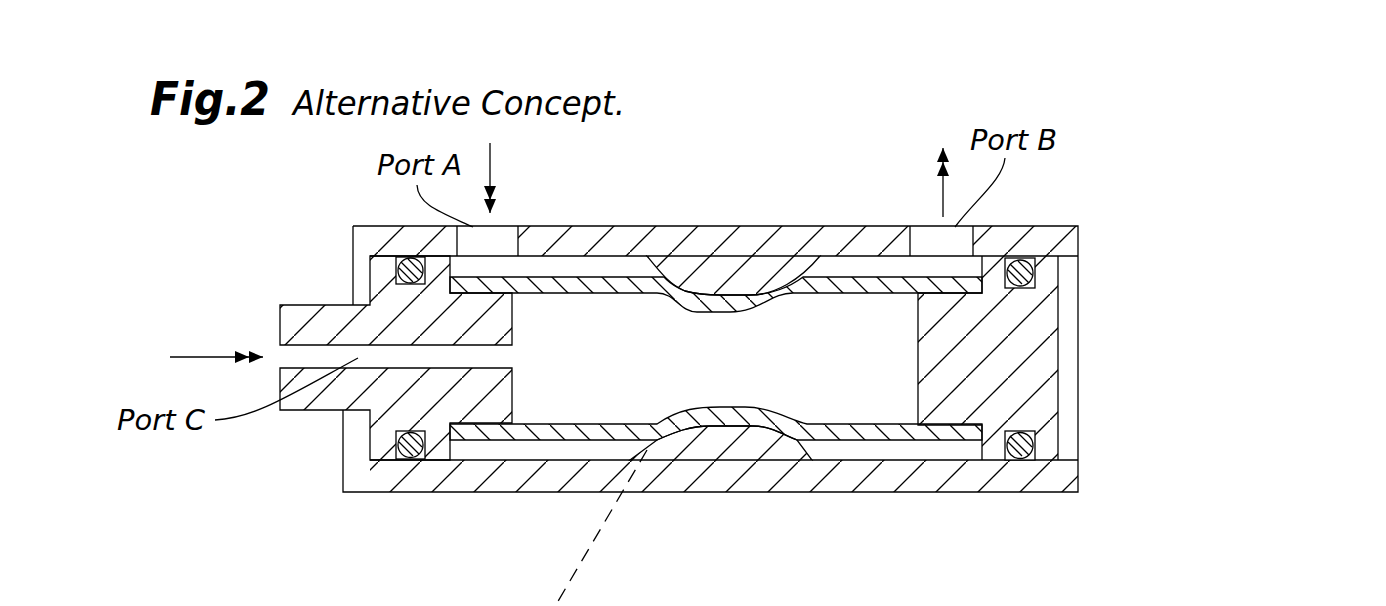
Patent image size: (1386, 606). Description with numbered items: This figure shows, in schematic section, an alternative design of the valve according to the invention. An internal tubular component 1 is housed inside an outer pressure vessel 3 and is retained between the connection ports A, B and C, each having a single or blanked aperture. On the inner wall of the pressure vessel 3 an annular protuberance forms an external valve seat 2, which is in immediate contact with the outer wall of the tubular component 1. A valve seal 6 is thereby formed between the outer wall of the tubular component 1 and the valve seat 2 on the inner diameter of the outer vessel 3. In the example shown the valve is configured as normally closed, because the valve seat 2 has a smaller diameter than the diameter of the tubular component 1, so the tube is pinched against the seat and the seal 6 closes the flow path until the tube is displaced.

The internal tubular component 1 is at (883, 435).
The valve seat 2 is at (722, 445).
The pressure vessel 3 is at (1018, 237).
The valve seal 6 is at (828, 258).